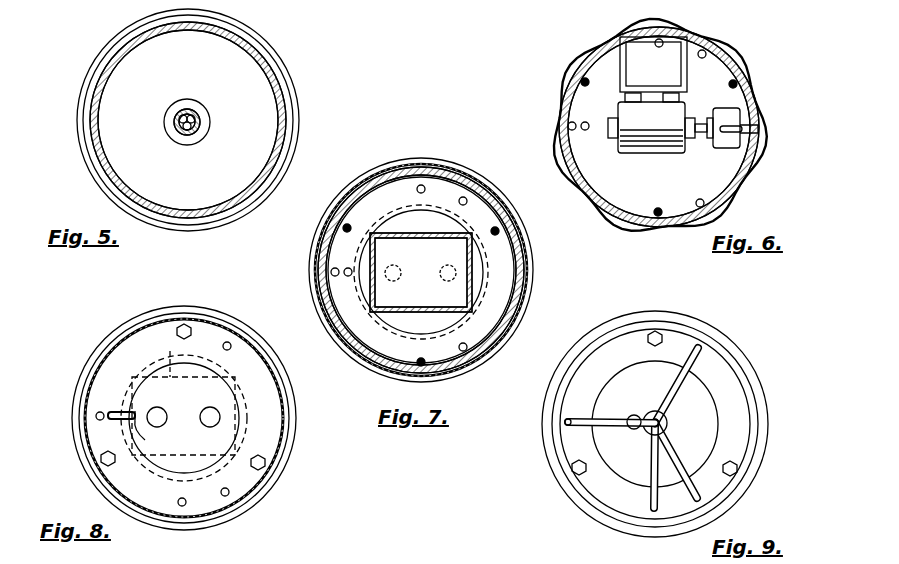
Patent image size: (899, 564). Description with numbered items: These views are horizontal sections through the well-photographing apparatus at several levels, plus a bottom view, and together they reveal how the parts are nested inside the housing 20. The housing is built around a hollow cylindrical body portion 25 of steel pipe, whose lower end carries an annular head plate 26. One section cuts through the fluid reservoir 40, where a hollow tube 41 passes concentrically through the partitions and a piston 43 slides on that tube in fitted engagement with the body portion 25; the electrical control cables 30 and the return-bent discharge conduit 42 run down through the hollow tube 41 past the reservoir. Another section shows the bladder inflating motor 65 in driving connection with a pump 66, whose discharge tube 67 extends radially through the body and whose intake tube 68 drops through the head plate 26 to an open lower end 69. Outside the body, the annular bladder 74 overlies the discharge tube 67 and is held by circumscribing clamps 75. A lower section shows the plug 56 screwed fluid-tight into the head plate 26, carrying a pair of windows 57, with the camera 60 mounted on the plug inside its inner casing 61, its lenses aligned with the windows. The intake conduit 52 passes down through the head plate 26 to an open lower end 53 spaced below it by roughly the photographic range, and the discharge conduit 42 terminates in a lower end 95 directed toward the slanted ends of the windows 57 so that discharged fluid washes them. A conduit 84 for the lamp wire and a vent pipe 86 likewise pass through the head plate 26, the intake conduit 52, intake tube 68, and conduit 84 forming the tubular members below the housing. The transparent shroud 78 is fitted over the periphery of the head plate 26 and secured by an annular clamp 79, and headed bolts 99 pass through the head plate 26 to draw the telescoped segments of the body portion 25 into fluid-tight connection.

In FIG. 5, the housing 20 is at (276, 72).
In FIG. 7, the housing 20 is at (402, 172).
In FIG. 6, the housing 20 is at (605, 32).
In FIG. 8, the housing 20 is at (124, 330).
In FIG. 9, the housing 20 is at (612, 326).
In FIG. 5, the body portion 25 is at (256, 52).
In FIG. 7, the body portion 25 is at (364, 192).
In FIG. 6, the body portion 25 is at (566, 96).
In FIG. 8, the head plate 26 is at (126, 360).
In FIG. 9, the head plate 26 is at (742, 416).
In FIG. 5, the electrical control cables 30 is at (190, 136).
In FIG. 5, the fluid reservoir 40 is at (197, 69).
In FIG. 5, the hollow tube 41 is at (183, 112).
In FIG. 5, the discharge conduit 42 is at (176, 121).
In FIG. 7, the discharge conduit 42 is at (349, 277).
In FIG. 6, the discharge conduit 42 is at (586, 130).
In FIG. 8, the discharge conduit 42 is at (113, 410).
In FIG. 5, the piston 43 is at (237, 94).
In FIG. 7, the intake conduit 52 is at (333, 269).
In FIG. 6, the intake conduit 52 is at (574, 122).
In FIG. 8, the intake conduit 52 is at (96, 414).
In FIG. 9, the intake conduit 52 is at (572, 418).
In FIG. 9, the open lower end 53 is at (637, 414).
In FIG. 7, the plug 56 is at (408, 222).
In FIG. 8, the plug 56 is at (212, 373).
In FIG. 9, the plug 56 is at (634, 370).
In FIG. 7, the windows 57 is at (446, 280).
In FIG. 8, the windows 57 is at (210, 408).
In FIG. 7, the camera 60 is at (421, 272).
In FIG. 8, the camera 60 is at (183, 416).
In FIG. 7, the inner casing 61 is at (432, 233).
In FIG. 8, the inner casing 61 is at (168, 356).
In FIG. 6, the bladder inflating motor 65 is at (665, 140).
In FIG. 6, the pump 66 is at (725, 112).
In FIG. 6, the discharge tube 67 is at (730, 134).
In FIG. 7, the intake tube 68 is at (463, 343).
In FIG. 6, the intake tube 68 is at (700, 199).
In FIG. 8, the intake tube 68 is at (230, 342).
In FIG. 9, the intake tube 68 is at (700, 346).
In FIG. 9, the open lower end 69 is at (668, 415).
In FIG. 7, the annular bladder 74 is at (528, 258).
In FIG. 6, the annular bladder 74 is at (736, 56).
In FIG. 5, the clamps 75 is at (292, 128).
In FIG. 7, the clamps 75 is at (530, 280).
In FIG. 8, the shroud 78 is at (288, 442).
In FIG. 9, the shroud 78 is at (742, 376).
In FIG. 8, the annular clamp 79 is at (280, 466).
In FIG. 9, the annular clamp 79 is at (760, 400).
In FIG. 7, the conduit 84 is at (422, 185).
In FIG. 6, the conduit 84 is at (658, 47).
In FIG. 8, the conduit 84 is at (182, 506).
In FIG. 9, the conduit 84 is at (652, 508).
In FIG. 5, the vent pipe 86 is at (200, 124).
In FIG. 7, the vent pipe 86 is at (466, 198).
In FIG. 6, the vent pipe 86 is at (702, 58).
In FIG. 8, the vent pipe 86 is at (227, 496).
In FIG. 9, the vent pipe 86 is at (700, 498).
In FIG. 8, the lower end 95 is at (142, 442).
In FIG. 7, the headed bolts 99 is at (345, 226).
In FIG. 6, the headed bolts 99 is at (582, 78).
In FIG. 8, the headed bolts 99 is at (185, 323).
In FIG. 9, the headed bolts 99 is at (655, 330).